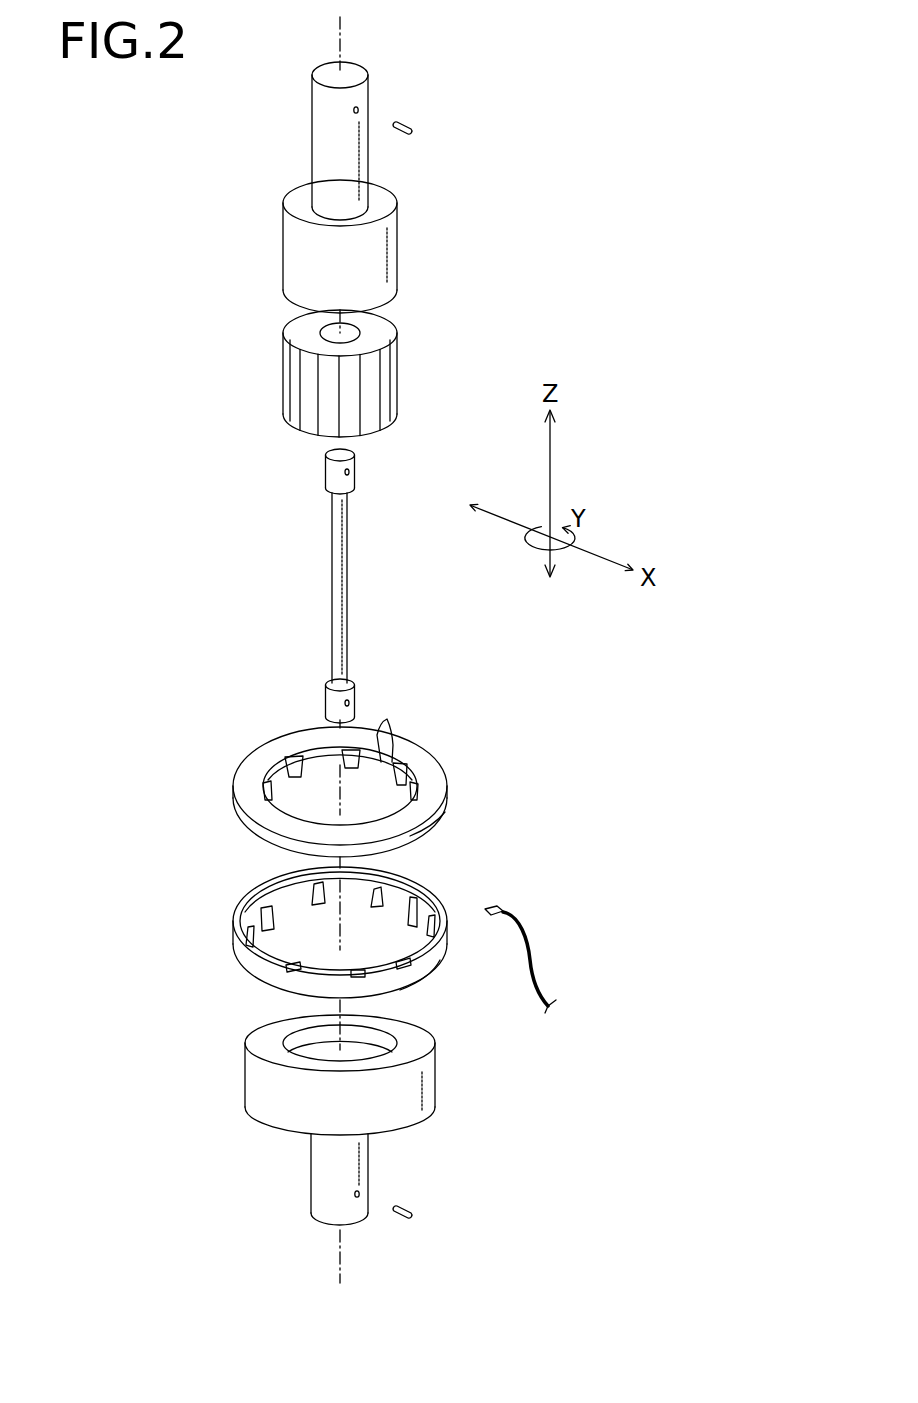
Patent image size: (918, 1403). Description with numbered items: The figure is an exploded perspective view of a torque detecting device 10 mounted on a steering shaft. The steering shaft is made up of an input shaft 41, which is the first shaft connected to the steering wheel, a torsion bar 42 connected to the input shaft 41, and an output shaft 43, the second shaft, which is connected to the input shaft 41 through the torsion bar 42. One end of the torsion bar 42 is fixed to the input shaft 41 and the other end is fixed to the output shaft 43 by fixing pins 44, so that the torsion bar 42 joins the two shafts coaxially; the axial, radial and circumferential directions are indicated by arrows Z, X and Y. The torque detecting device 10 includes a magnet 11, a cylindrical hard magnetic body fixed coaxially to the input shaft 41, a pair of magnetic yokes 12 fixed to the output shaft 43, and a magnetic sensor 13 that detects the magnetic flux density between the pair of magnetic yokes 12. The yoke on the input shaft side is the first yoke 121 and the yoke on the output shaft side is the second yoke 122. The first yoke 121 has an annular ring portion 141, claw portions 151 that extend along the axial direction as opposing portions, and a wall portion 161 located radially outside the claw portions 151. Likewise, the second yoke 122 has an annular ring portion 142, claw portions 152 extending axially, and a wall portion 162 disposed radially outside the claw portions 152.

The torque detecting device 10 is at (58, 310).
The magnet 11 is at (283, 375).
The magnetic yokes 12 is at (122, 793).
The magnetic sensor 13 is at (533, 957).
The input shaft 41 is at (325, 102).
The torsion bar 42 is at (332, 560).
The output shaft 43 is at (325, 1180).
The fixing pins 44 is at (409, 128).
The first yoke 121 is at (328, 771).
The second yoke 122 is at (303, 934).
The annular ring portion 141 is at (272, 752).
The annular ring portion 142 is at (297, 881).
The claw portion 151 is at (388, 729).
The claw portion 152 is at (412, 868).
The wall portion 161 is at (448, 820).
The wall portion 162 is at (413, 973).